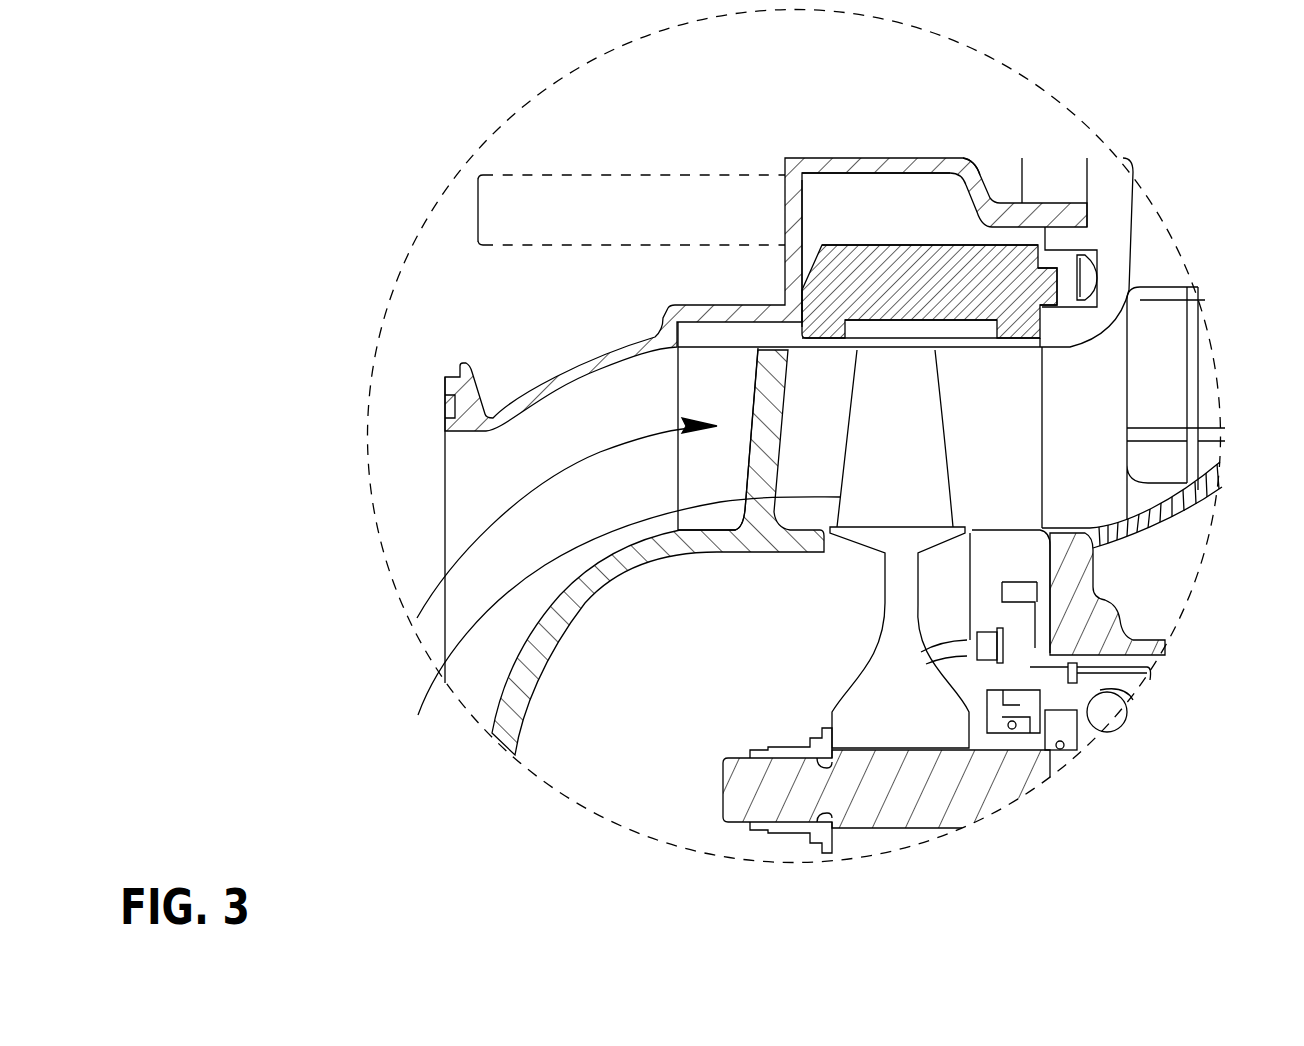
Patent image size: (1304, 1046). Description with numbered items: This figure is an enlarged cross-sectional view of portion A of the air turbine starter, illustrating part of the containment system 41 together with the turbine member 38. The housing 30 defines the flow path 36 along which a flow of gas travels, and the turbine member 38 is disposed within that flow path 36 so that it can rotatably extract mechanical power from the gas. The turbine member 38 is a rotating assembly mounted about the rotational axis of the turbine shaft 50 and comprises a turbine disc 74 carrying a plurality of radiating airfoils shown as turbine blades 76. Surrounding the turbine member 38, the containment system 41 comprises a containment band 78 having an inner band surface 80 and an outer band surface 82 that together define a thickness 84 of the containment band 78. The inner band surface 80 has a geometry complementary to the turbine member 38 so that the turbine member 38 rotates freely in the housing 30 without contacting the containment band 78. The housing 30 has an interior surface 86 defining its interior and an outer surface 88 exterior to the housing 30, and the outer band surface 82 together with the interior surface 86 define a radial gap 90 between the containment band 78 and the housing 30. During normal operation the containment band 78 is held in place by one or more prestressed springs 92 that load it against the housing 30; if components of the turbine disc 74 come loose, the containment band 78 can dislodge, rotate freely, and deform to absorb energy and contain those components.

The housing 30 is at (846, 156).
The containment system 41 is at (848, 213).
The turbine member 38 is at (836, 435).
The flow path 36 is at (570, 470).
The turbine blades 76 is at (616, 561).
The turbine disc 74 is at (862, 666).
The turbine shaft 50 is at (955, 784).
The thickness 84 is at (864, 298).
The containment band 78 is at (965, 260).
The inner band surface 80 is at (927, 317).
The outer band surface 82 is at (995, 247).
The interior surface 86 is at (913, 157).
The outer surface 88 is at (878, 157).
The radial gap 90 is at (466, 231).
The prestressed springs 92 is at (1092, 276).
The portion A is at (1085, 120).